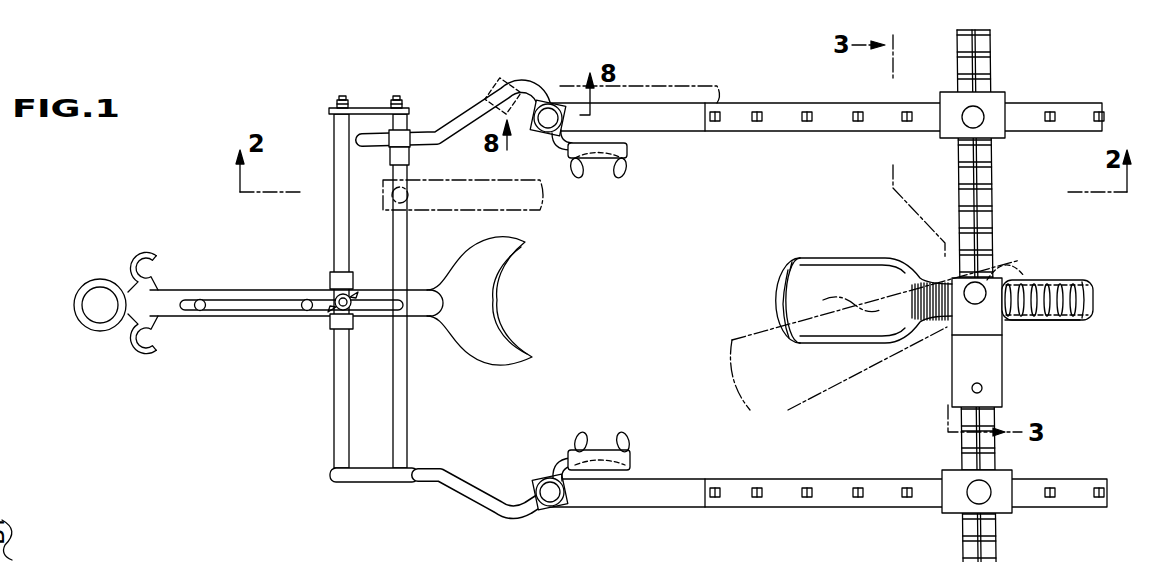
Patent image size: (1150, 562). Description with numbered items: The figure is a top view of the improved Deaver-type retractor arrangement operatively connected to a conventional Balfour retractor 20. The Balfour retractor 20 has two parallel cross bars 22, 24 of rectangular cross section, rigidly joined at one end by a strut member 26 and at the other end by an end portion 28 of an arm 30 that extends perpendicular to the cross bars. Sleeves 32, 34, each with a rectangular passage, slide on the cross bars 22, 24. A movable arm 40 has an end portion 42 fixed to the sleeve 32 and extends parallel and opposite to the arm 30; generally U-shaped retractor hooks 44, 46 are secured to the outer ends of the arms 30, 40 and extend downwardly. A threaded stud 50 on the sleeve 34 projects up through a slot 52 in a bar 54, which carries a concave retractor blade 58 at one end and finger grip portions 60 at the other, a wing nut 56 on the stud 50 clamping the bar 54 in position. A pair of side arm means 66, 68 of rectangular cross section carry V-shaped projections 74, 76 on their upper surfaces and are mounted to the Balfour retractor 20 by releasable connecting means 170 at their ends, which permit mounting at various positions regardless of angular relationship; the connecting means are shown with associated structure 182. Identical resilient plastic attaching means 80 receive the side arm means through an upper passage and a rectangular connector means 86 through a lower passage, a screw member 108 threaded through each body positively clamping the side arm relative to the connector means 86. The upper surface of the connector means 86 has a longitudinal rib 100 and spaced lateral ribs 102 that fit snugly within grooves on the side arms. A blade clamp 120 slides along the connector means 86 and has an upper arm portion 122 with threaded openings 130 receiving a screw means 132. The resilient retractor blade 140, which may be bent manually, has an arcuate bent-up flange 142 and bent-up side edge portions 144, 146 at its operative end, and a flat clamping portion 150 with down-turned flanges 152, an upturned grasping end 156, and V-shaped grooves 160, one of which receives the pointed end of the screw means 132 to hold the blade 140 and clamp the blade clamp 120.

The Balfour retractor 20 is at (390, 293).
The cross bar 22 is at (410, 385).
The cross bar 24 is at (335, 380).
The strut member 26 is at (372, 108).
The end portion 28 is at (362, 482).
The arm 30 is at (472, 505).
The sleeve 32 is at (410, 156).
The sleeve 34 is at (330, 280).
The movable arm 40 is at (458, 120).
The end portion 42 is at (403, 135).
The retractor blade or hook 44 is at (634, 443).
The retractor blade or hook 46 is at (628, 170).
The threaded stud 50 is at (352, 320).
The slot 52 is at (296, 334).
The bar 54 is at (215, 320).
The wing nut 56 is at (355, 290).
The concave retractor blade 58 is at (492, 288).
The finger grip portions 60 is at (128, 352).
The side arm means 66 is at (797, 140).
The side arm means 68 is at (695, 508).
The projections 74 is at (806, 103).
The projections 76 is at (808, 507).
The attaching means 80 is at (996, 98).
The connector means 86 is at (990, 222).
The longitudinally extending rib 100 is at (988, 162).
The laterally extending ribs 102 is at (962, 180).
The screw member 108 is at (990, 125).
The blade clamp 120 is at (1010, 338).
The upper arm portion 122 is at (990, 362).
The threaded openings 130 is at (983, 390).
The screw means 132 is at (1010, 268).
The retractor blade 140 is at (873, 300).
The arcuate bent-up flange 142 is at (785, 300).
The side edge portion 144 is at (840, 345).
The side edge portion 146 is at (870, 262).
The clamping portion 150 is at (1075, 275).
The down-turned flanges 152 is at (1058, 320).
The upturned end / manual grasping portion 156 is at (1088, 300).
The grooves 160 is at (1033, 282).
The releasable connecting means 170 is at (556, 104).
The bearing mount 182 is at (572, 123).